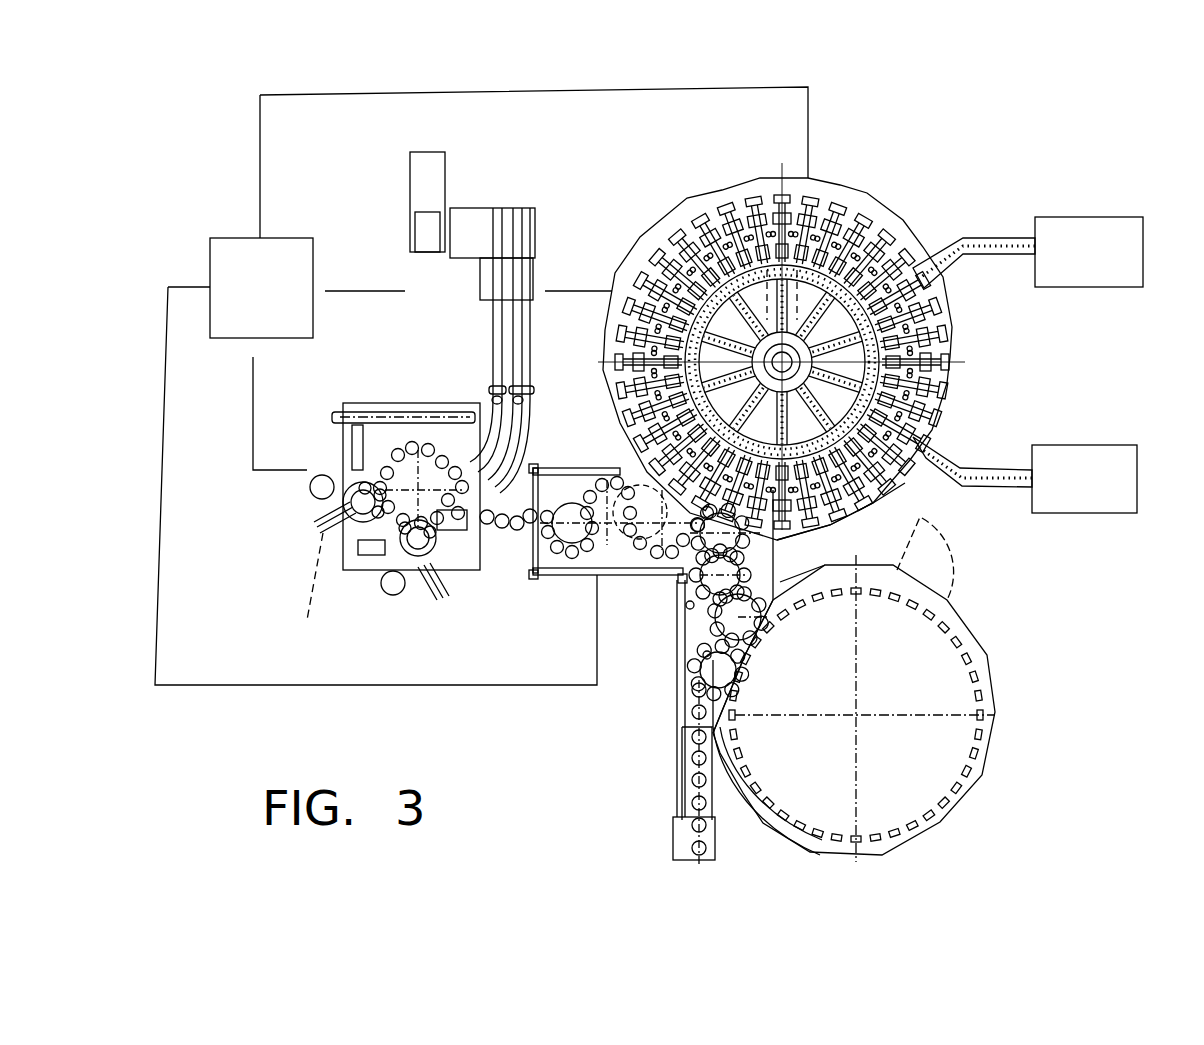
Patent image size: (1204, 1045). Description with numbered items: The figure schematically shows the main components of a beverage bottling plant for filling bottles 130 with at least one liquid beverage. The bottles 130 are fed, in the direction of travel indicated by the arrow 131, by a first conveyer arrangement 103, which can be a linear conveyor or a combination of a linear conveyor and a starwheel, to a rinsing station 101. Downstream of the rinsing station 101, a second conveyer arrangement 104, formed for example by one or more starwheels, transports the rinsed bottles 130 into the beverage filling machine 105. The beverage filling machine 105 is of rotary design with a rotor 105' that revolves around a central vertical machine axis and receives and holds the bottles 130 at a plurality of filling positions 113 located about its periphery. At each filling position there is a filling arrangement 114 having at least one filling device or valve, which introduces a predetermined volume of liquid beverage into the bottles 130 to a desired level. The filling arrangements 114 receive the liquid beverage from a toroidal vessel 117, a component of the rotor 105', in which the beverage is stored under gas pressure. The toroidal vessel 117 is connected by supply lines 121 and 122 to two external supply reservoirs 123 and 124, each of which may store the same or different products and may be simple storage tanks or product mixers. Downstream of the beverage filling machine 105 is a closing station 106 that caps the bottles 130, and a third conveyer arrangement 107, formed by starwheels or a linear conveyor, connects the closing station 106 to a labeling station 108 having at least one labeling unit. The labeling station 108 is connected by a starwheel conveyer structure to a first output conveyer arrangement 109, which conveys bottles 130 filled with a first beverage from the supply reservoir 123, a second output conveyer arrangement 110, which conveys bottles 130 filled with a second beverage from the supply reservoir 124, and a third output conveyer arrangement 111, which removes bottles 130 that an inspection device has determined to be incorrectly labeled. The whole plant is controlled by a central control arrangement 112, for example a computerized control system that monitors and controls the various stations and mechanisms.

The rinsing station 101 is at (1012, 610).
The first conveyer arrangement 103 is at (710, 787).
The second conveyer arrangement 104 is at (690, 637).
The beverage filling machine 105 is at (834, 346).
The rotor 105' is at (777, 345).
The closing station 106 is at (586, 458).
The third conveyer arrangement 107 is at (542, 592).
The labeling station 108 is at (371, 608).
The first output conveyer arrangement 109 is at (522, 387).
The second output conveyer arrangement 110 is at (492, 332).
The third output conveyer arrangement 111 is at (386, 408).
The central control arrangement 112 is at (277, 307).
The filling positions 113 is at (947, 297).
The filling arrangement 114 is at (935, 390).
The toroidal vessel 117 is at (888, 498).
The supply line 121 is at (987, 236).
The supply line 122 is at (985, 462).
The external supply reservoir 123 is at (1135, 260).
The external supply reservoir 124 is at (1137, 487).
The bottles 130 is at (700, 803).
The arrow 131 is at (659, 784).